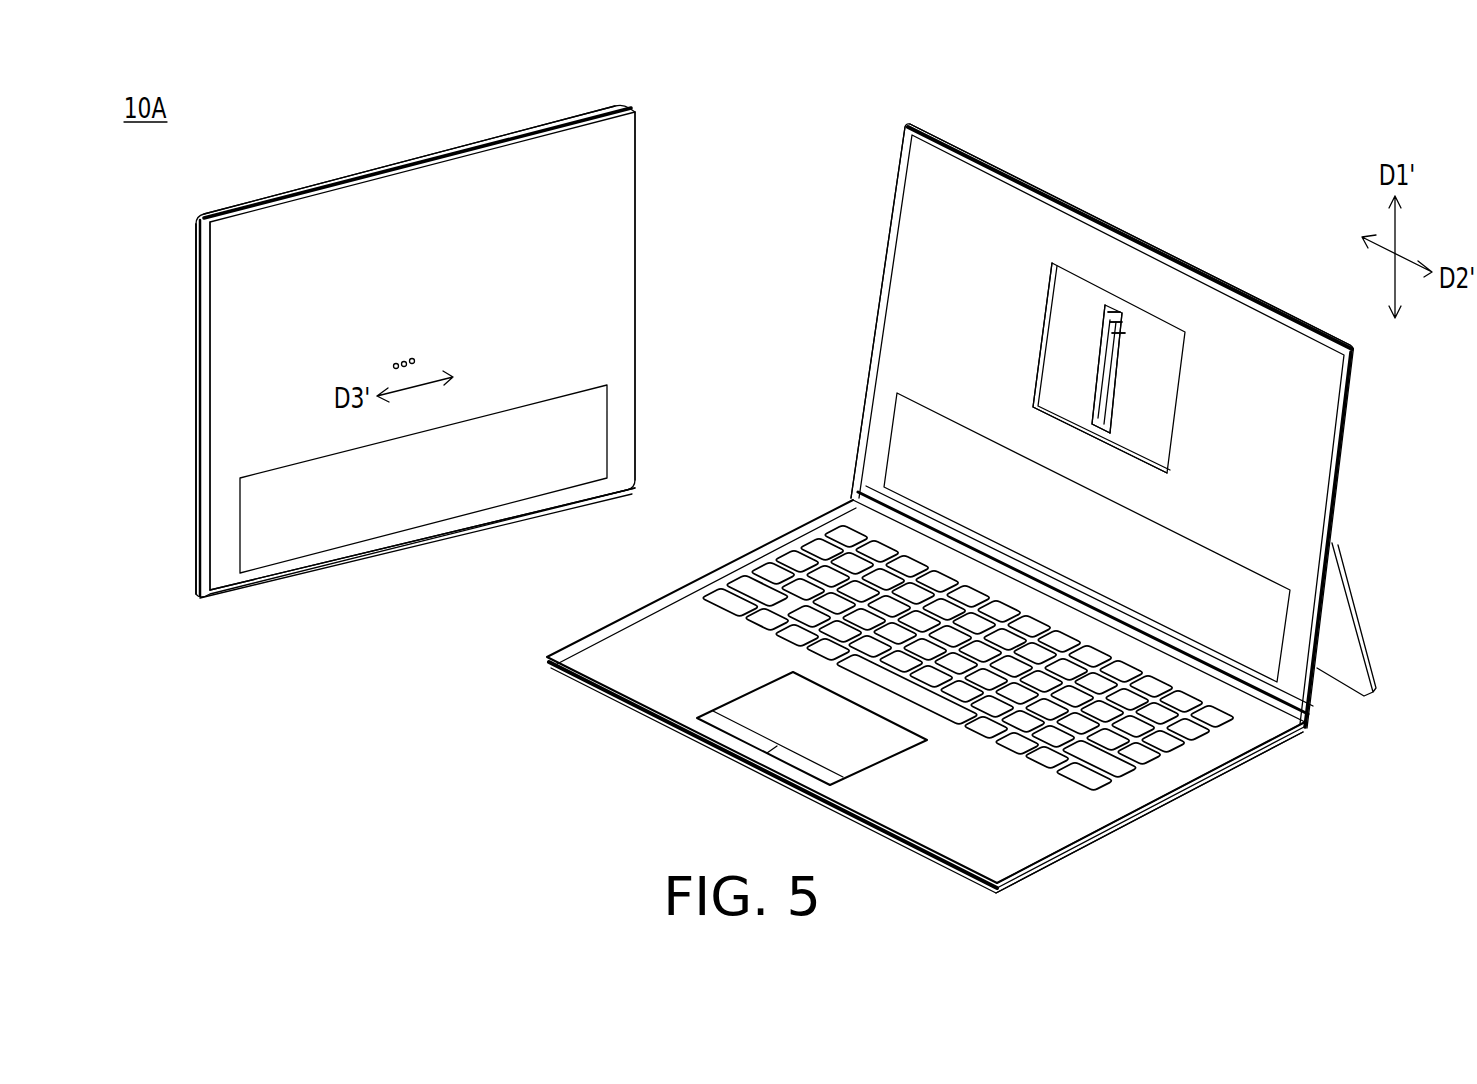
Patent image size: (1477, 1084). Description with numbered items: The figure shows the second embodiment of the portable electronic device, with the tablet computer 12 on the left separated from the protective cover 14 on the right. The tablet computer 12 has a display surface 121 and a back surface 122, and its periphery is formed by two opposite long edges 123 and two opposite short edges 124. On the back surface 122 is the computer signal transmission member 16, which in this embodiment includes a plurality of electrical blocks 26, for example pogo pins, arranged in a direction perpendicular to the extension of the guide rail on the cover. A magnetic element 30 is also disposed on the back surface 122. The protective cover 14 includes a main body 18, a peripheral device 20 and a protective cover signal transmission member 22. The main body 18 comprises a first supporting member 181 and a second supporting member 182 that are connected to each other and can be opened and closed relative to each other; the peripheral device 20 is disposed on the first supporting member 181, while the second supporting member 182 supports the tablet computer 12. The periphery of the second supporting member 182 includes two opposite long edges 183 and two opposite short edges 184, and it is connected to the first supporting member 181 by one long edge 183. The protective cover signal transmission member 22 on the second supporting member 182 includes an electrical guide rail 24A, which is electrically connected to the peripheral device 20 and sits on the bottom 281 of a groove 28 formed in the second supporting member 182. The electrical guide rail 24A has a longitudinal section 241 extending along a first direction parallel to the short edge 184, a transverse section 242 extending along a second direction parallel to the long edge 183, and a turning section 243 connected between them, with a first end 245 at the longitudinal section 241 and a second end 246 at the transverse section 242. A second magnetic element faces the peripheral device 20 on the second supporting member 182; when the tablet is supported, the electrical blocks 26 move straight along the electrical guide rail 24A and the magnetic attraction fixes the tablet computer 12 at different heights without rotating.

The tablet computer 12 is at (262, 175).
The display surface 121 is at (195, 268).
The back surface 122 is at (595, 262).
The long edge 123 is at (440, 151).
The short edge 124 is at (645, 210).
The computer signal transmission member 16 is at (409, 352).
The electrical block 26 is at (396, 358).
The magnetic element 30 is at (583, 434).
The protective cover 14 is at (1225, 255).
The main body 18 is at (1395, 745).
The first supporting member 181 is at (1240, 747).
The second supporting member 182 is at (1317, 697).
The long edge 183 is at (1282, 305).
The short edge 184 is at (878, 265).
The peripheral device 20 is at (1160, 755).
The protective cover signal transmission member 22 is at (1076, 392).
The electrical guide rail 24A is at (1091, 357).
The longitudinal section 241 is at (1117, 423).
The transverse section 242 is at (1126, 340).
The turning section 243 is at (1128, 340).
The first end 245 is at (1093, 437).
The second end 246 is at (1118, 318).
The groove 28 is at (1188, 362).
The bottom 281 is at (1162, 380).